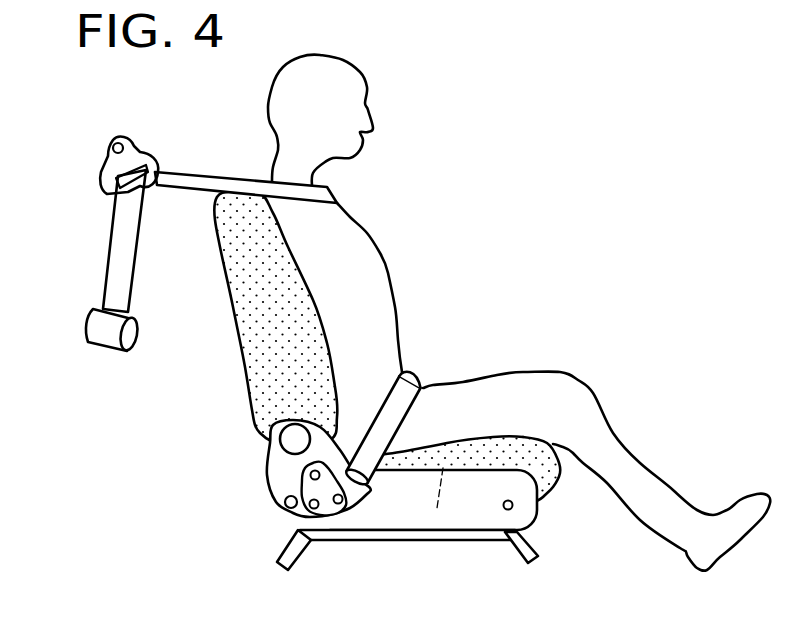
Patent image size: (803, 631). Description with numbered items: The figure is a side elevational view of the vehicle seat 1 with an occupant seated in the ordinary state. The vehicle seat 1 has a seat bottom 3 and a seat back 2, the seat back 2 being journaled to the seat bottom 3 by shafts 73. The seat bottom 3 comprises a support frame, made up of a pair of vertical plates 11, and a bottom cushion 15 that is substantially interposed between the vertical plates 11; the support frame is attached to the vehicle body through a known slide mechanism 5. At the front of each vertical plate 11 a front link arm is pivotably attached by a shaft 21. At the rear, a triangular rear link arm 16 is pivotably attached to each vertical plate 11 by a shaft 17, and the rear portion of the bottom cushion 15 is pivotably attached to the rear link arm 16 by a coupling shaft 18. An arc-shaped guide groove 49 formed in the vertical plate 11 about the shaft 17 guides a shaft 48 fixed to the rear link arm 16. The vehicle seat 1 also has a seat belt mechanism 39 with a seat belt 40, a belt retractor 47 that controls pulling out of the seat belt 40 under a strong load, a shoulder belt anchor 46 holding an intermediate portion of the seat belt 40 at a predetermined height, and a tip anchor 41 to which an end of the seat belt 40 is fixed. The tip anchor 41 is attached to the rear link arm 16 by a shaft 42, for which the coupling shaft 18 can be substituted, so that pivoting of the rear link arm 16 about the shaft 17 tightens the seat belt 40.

The vehicle seat 1 is at (308, 389).
The seat back 2 is at (257, 347).
The seat bottom 3 is at (485, 438).
The slide mechanism 5 is at (425, 537).
The vertical plate 11 is at (458, 518).
The bottom cushion 15 is at (543, 473).
The rear link arm 16 is at (303, 492).
The shaft 17 is at (308, 472).
The coupling shaft 18 is at (366, 542).
The shaft 21 is at (508, 510).
The seat belt mechanism 39 is at (205, 170).
The seat belt 40 is at (247, 344).
The tip anchor 41 is at (353, 497).
The shaft 42 is at (338, 510).
The shoulder belt anchor 46 is at (138, 153).
The belt retractor 47 is at (103, 340).
The shaft 48 is at (315, 512).
The guide groove 49 is at (293, 500).
The shaft 73 is at (295, 436).